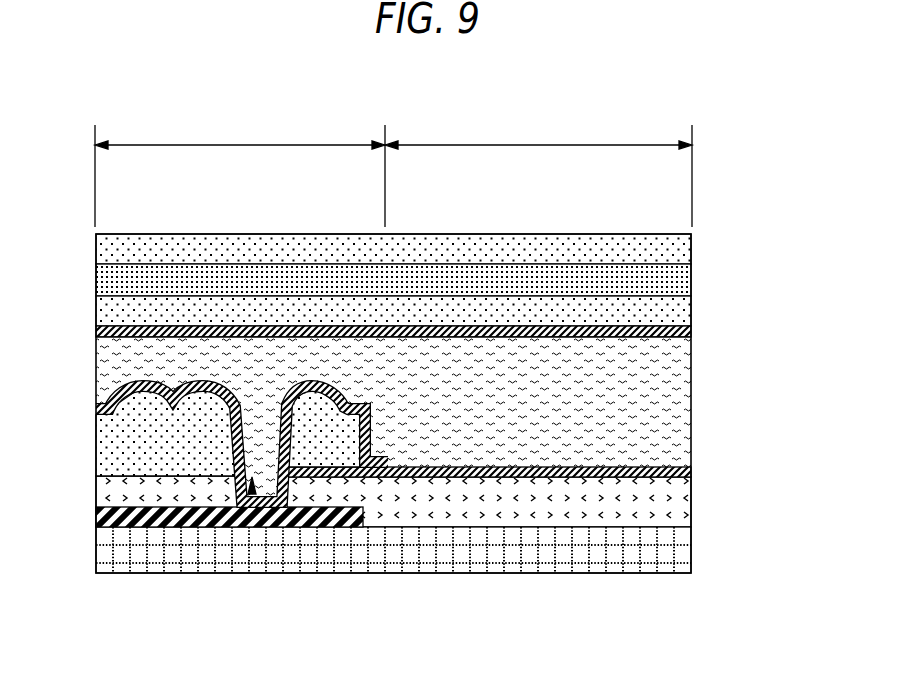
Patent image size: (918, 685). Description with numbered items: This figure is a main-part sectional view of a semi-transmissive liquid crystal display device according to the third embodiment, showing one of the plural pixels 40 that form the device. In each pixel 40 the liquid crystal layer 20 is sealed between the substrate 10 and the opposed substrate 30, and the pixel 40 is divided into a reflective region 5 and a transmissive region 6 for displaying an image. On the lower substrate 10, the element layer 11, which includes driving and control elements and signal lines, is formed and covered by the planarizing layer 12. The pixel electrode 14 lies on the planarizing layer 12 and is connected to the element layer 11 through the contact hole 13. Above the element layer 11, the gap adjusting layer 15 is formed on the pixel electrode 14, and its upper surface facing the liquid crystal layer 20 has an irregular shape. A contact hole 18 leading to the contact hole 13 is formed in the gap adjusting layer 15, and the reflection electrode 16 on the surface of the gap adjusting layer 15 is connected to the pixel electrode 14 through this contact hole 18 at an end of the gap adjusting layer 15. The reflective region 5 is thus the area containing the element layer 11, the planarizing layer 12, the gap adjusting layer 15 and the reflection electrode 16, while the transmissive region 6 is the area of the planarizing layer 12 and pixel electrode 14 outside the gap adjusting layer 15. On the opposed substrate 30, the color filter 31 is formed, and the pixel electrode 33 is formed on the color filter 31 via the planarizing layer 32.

The reflective region 5 is at (240, 171).
The transmissive region 6 is at (538, 171).
The substrate 10 is at (670, 551).
The element layer 11 is at (162, 527).
The planarizing layer 12 is at (650, 487).
The contact hole 13 is at (247, 508).
The pixel electrode 14 is at (653, 467).
The gap adjusting layer 15 is at (146, 430).
The reflection electrode 16 is at (195, 383).
The contact hole 18 is at (268, 425).
The liquid crystal layer 20 is at (650, 387).
The substrate 30 is at (664, 250).
The color filter 31 is at (665, 280).
The planarizing layer 32 is at (665, 308).
The pixel electrode 33 is at (665, 333).
The pixel 40 is at (702, 212).